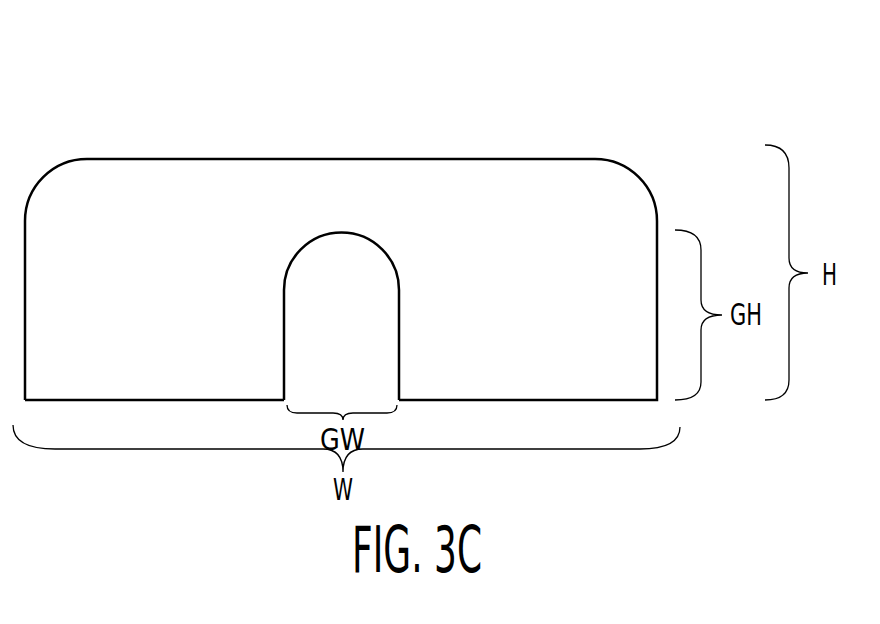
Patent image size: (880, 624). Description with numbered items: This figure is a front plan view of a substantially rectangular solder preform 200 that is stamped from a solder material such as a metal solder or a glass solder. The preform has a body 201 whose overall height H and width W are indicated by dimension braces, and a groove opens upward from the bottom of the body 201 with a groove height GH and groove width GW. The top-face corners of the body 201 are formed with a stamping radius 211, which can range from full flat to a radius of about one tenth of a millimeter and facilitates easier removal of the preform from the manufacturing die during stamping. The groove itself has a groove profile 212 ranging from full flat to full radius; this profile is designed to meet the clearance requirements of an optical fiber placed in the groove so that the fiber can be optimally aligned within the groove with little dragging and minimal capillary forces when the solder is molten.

The solder preform 200 is at (597, 37).
The body 201 is at (510, 136).
The stamping radius 211 is at (43, 177).
The groove profile 212 is at (345, 233).